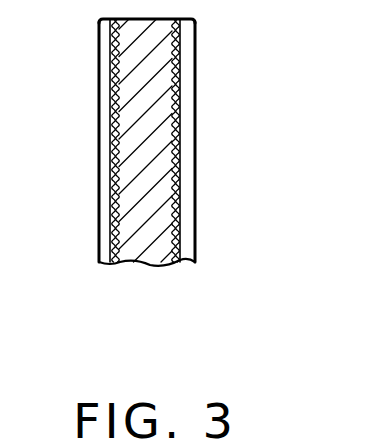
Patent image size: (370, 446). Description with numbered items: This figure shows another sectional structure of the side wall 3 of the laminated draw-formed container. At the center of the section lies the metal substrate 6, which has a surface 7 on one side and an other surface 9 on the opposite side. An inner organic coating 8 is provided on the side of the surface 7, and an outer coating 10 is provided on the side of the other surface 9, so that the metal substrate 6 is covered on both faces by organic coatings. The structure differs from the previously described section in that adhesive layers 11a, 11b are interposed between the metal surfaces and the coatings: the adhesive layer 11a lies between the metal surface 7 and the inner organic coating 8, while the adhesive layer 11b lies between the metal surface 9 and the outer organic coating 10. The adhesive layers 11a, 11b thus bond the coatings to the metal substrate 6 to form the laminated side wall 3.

The side wall 3 is at (196, 44).
The metal substrate 6 is at (143, 243).
The surface 7 is at (178, 188).
The inner organic coating 8 is at (188, 137).
The other surface 9 is at (110, 176).
The outer coating 10 is at (100, 135).
The adhesive layer 11a is at (178, 95).
The adhesive layer 11b is at (115, 81).